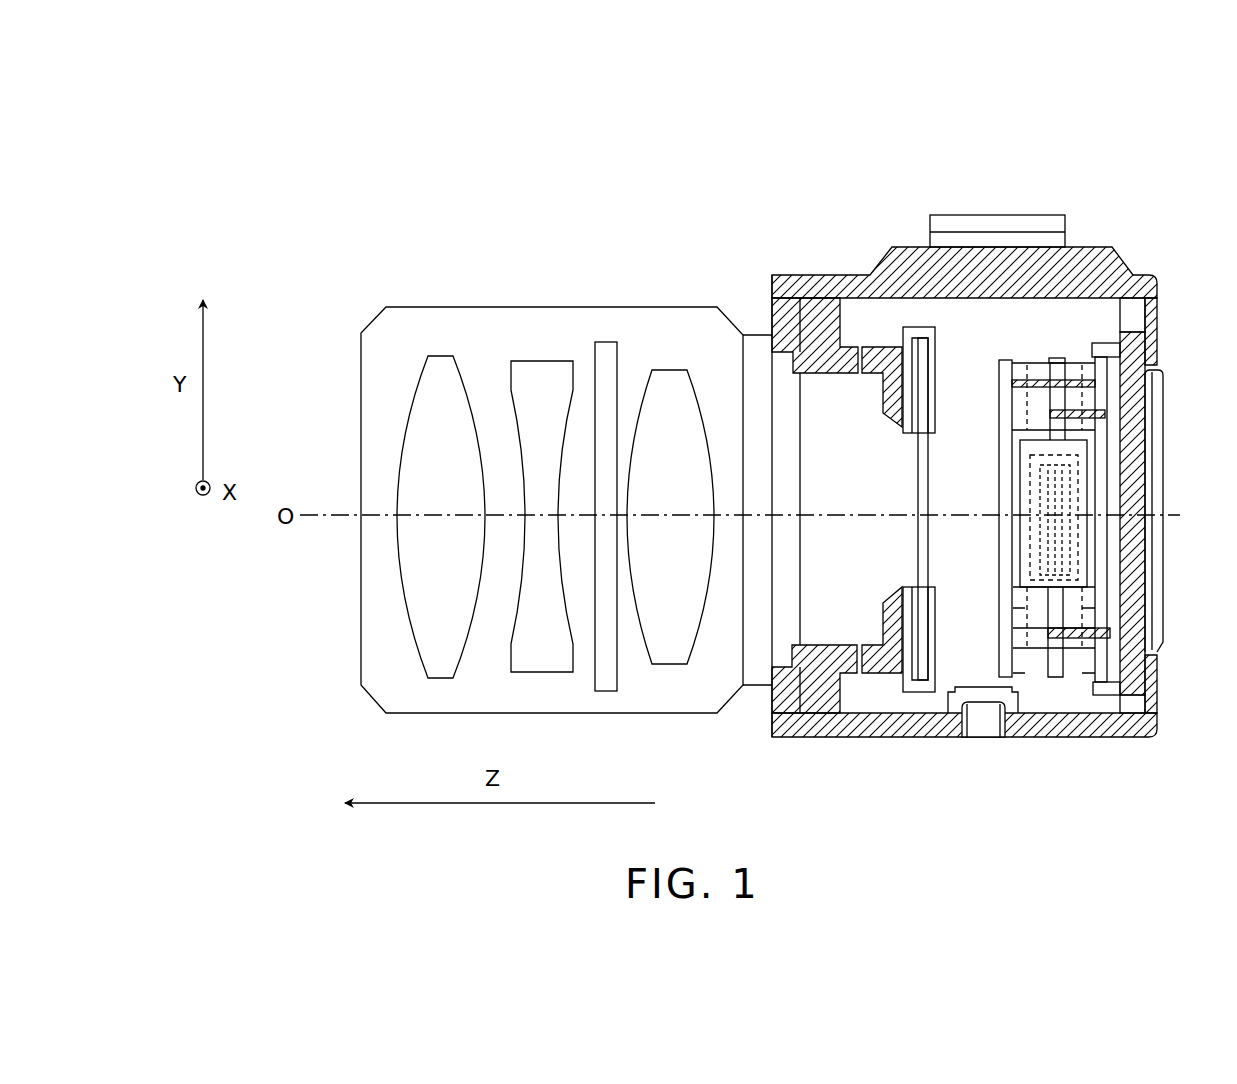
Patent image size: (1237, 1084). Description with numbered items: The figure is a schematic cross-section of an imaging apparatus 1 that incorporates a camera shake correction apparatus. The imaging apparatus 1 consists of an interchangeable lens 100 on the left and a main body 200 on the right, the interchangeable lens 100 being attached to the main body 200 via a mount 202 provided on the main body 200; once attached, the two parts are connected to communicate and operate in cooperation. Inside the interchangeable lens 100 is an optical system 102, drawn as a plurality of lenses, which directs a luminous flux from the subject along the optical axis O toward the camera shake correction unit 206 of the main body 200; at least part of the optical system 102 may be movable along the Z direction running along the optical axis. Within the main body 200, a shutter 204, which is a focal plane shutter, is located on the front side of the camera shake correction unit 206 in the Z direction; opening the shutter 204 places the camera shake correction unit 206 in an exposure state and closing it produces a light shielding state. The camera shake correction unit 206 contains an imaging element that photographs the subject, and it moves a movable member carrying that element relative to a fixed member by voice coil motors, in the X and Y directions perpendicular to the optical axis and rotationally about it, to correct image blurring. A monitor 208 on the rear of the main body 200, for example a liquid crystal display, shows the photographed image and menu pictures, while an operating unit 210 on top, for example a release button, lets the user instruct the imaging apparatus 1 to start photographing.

The imaging apparatus 1 is at (799, 424).
The interchangeable lens 100 is at (566, 478).
The optical system 102 is at (631, 332).
The main body 200 is at (956, 463).
The mount 202 is at (772, 712).
The shutter 204 is at (918, 485).
The camera shake correction unit 206 is at (1058, 355).
The monitor 208 is at (1163, 490).
The operating unit 210 is at (1030, 215).